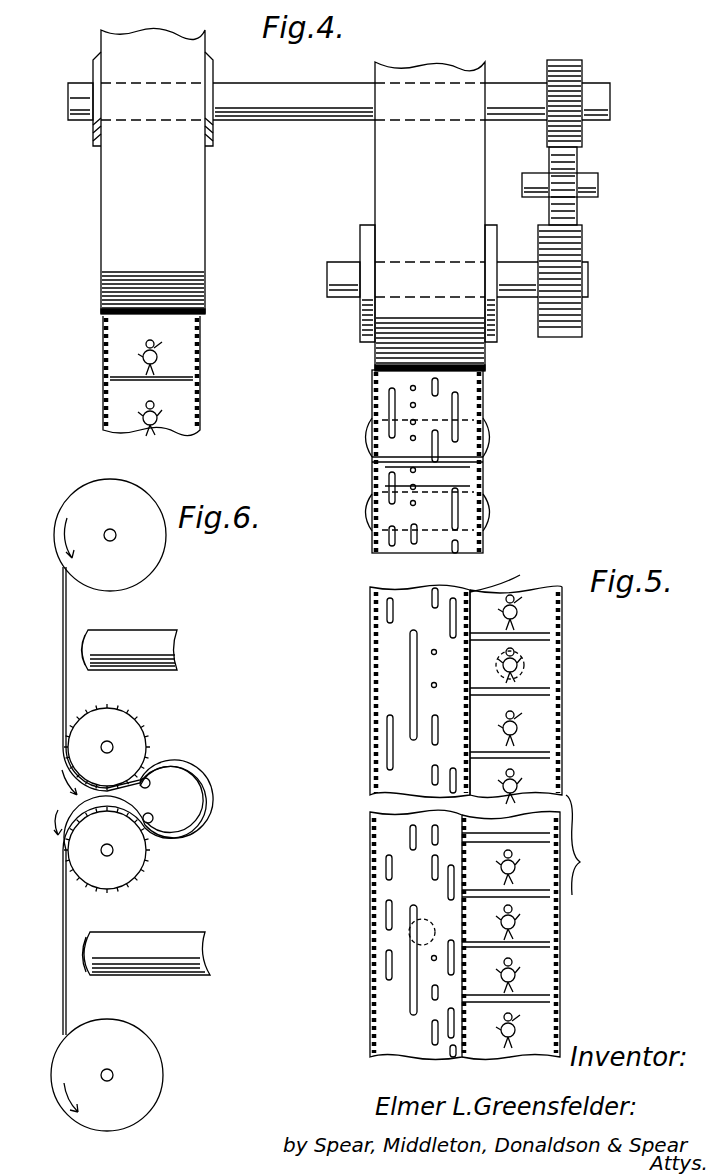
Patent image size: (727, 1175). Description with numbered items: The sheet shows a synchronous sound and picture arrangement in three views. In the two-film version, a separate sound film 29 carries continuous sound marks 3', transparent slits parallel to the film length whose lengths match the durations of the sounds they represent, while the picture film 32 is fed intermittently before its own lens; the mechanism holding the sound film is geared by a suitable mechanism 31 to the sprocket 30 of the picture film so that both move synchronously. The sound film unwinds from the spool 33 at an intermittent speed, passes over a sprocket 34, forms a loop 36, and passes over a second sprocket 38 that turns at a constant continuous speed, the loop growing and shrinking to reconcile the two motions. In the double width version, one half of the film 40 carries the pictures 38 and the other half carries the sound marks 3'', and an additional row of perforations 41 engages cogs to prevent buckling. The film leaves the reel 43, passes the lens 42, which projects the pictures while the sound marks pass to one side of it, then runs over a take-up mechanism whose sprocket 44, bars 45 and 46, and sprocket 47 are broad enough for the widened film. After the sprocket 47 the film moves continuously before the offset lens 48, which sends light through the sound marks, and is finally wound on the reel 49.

In FIG. 4, the sound film 29 is at (462, 394).
In FIG. 4, the sprocket 30 is at (578, 124).
In FIG. 4, the gearing mechanism 31 is at (570, 210).
In FIG. 4, the picture film 32 is at (183, 358).
In FIG. 4, the sound marks 3' is at (390, 465).
In FIG. 4, the sprocket 34 is at (487, 437).
In FIG. 4, the loop 36 is at (455, 479).
In FIG. 4, the second sprocket 38 is at (487, 508).
In FIG. 6, the double width film 40 is at (62, 603).
In FIG. 5, the double width film 40 is at (532, 613).
In FIG. 5, the additional row of perforations 41 is at (509, 576).
In FIG. 6, the lens 42 is at (163, 638).
In FIG. 5, the lens 42 is at (524, 663).
In FIG. 6, the reel 43 is at (123, 535).
In FIG. 6, the sprocket 44 is at (135, 740).
In FIG. 6, the bar 45 is at (150, 777).
In FIG. 6, the spool 33 is at (200, 800).
In FIG. 6, the bar 46 is at (152, 822).
In FIG. 6, the sprocket 47 is at (130, 865).
In FIG. 6, the lens 48 is at (185, 946).
In FIG. 5, the lens 48 is at (420, 935).
In FIG. 6, the reel 49 is at (150, 1048).
In FIG. 5, the sound marks 3'' is at (394, 691).